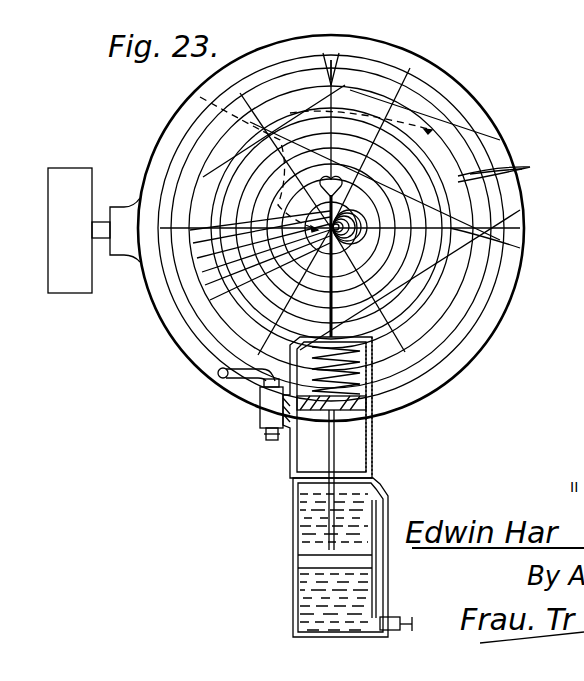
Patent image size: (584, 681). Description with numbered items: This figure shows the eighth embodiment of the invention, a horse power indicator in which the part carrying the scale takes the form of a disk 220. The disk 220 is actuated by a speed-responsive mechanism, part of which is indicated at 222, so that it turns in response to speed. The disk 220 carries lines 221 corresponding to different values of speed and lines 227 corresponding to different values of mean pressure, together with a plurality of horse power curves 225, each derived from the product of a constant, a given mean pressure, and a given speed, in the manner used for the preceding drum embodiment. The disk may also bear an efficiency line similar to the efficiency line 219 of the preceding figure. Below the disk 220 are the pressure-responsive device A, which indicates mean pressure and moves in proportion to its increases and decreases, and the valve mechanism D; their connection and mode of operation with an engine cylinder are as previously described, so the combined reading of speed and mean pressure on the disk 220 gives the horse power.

The efficiency line 219 is at (205, 100).
The disk 220 is at (436, 116).
The lines corresponding to different values of speed 221 is at (480, 226).
The speed-responsive mechanism 222 is at (62, 285).
The horse power curves 225 is at (345, 87).
The lines corresponding to different values of mean pressure 227 is at (522, 170).
The pressure-responsive device A is at (347, 406).
The valve mechanism D is at (254, 407).